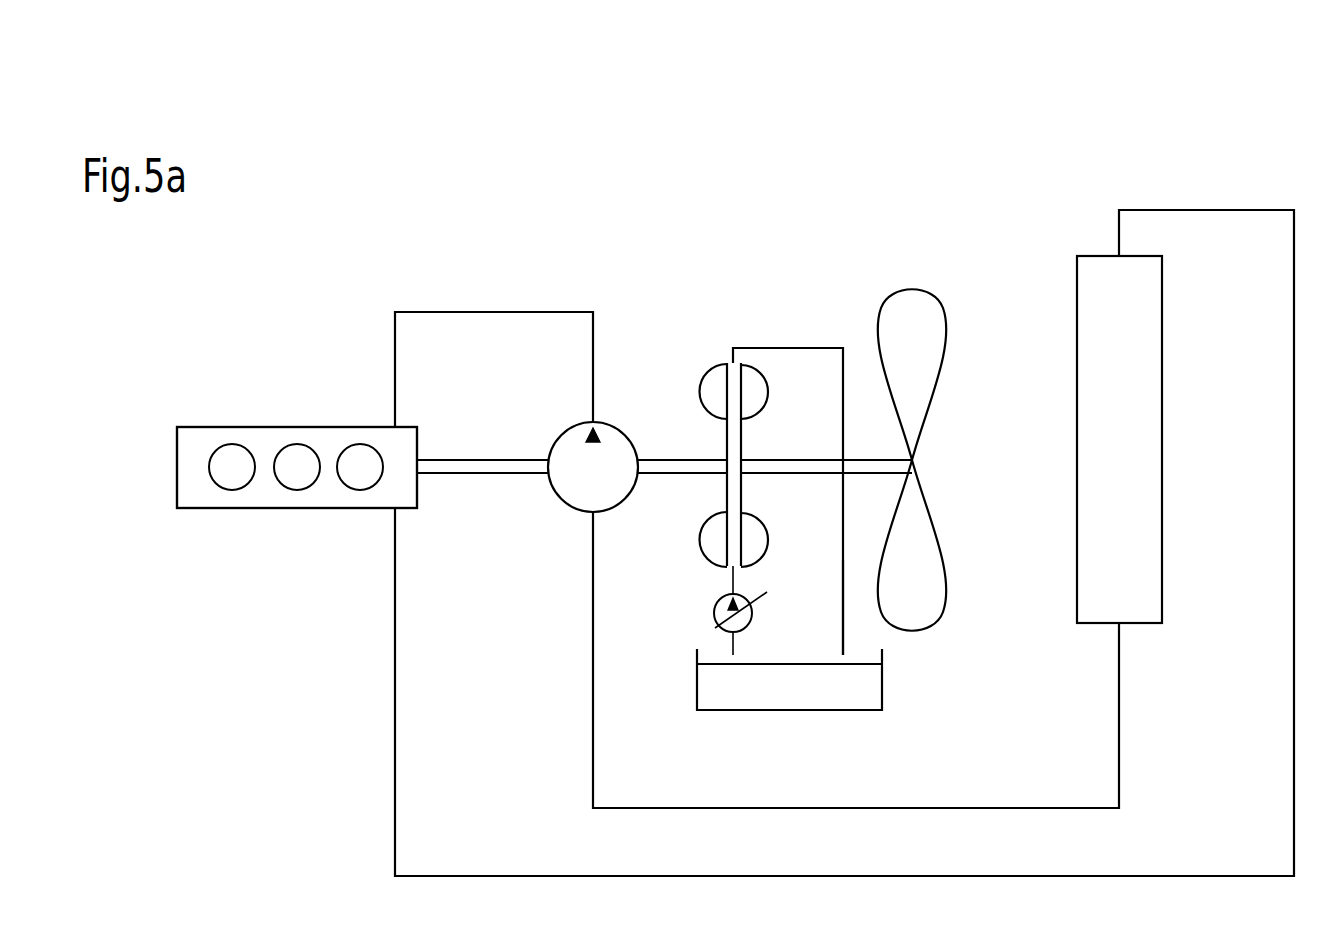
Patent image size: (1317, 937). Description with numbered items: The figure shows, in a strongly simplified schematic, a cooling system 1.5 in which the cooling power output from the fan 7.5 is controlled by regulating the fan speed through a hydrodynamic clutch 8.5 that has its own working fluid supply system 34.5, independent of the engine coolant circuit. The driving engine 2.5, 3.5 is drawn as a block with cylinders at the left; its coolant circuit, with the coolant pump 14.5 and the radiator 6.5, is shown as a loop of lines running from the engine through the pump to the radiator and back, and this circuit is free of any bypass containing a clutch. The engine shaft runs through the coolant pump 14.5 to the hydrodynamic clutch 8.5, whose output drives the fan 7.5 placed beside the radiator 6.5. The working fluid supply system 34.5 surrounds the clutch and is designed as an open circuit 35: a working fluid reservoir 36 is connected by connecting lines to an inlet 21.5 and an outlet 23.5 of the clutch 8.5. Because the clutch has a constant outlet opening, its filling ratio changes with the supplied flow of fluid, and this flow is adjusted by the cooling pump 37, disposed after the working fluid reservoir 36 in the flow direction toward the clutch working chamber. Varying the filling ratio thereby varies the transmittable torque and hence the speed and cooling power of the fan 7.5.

The cooling system 1.5 is at (846, 145).
The driving engine 2.5 is at (262, 437).
The driving engine 3.5 is at (297, 467).
The radiator 6.5 is at (1100, 280).
The fan 7.5 is at (922, 317).
The hydrodynamic clutch 8.5 is at (742, 330).
The coolant pump 14.5 is at (617, 437).
The inlet 21.5 is at (727, 570).
The outlet 23.5 is at (727, 352).
The working fluid supply system 34.5 is at (833, 329).
The open circuit 35 is at (844, 620).
The working fluid reservoir 36 is at (863, 690).
The cooling pump 37 is at (712, 605).